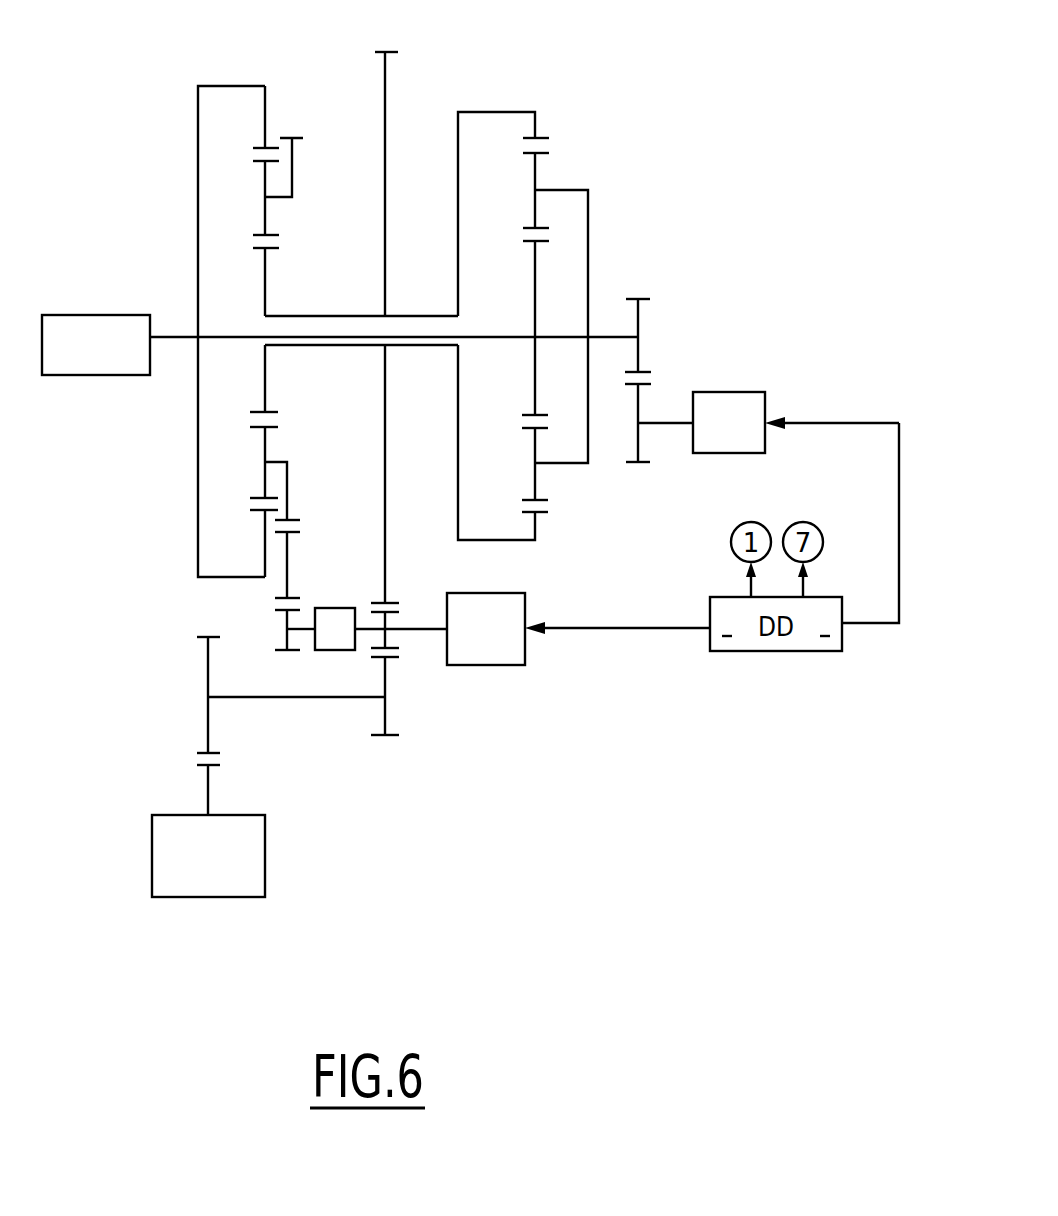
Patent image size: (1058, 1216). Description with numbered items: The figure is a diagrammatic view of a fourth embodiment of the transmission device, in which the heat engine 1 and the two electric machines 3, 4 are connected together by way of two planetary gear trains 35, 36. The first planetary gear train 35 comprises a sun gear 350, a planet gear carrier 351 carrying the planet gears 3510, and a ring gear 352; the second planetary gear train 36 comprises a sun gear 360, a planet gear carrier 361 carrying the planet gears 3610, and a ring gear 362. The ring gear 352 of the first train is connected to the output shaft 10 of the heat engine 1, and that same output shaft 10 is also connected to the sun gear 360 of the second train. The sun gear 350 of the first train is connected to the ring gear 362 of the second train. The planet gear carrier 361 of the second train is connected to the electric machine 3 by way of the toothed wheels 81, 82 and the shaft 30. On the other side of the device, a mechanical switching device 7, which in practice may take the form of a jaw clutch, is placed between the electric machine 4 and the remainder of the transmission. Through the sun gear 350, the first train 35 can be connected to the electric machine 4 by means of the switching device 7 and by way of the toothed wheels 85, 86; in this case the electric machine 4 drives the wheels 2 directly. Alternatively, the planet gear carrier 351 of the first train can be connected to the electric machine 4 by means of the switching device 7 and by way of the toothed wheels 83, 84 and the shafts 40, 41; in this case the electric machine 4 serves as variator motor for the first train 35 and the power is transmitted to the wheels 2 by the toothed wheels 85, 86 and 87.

The heat engine 1 is at (93, 355).
The output shaft 10 is at (173, 340).
The wheels 2 is at (205, 870).
The electric machine 3 is at (738, 428).
The shaft 30 is at (668, 425).
The electric machine 4 is at (505, 635).
The shaft 40 is at (417, 630).
The shaft 41 is at (302, 637).
The switching device 7 is at (333, 622).
The first planetary gear train 35 is at (240, 185).
The sun gear 350 is at (267, 283).
The planet gear carrier 351 is at (288, 482).
The planet gears 3510 is at (265, 440).
The ring gear 352 is at (268, 108).
The second planetary gear train 36 is at (571, 163).
The sun gear 360 is at (533, 362).
The planet gear carrier 361 is at (590, 235).
The planet gears 3610 is at (535, 172).
The ring gear 362 is at (536, 525).
The toothed wheel 81 is at (640, 347).
The toothed wheel 82 is at (637, 440).
The toothed wheel 83 is at (288, 552).
The toothed wheel 84 is at (283, 617).
The toothed wheel 85 is at (393, 715).
The toothed wheel 86 is at (390, 615).
The toothed wheel 87 is at (388, 93).